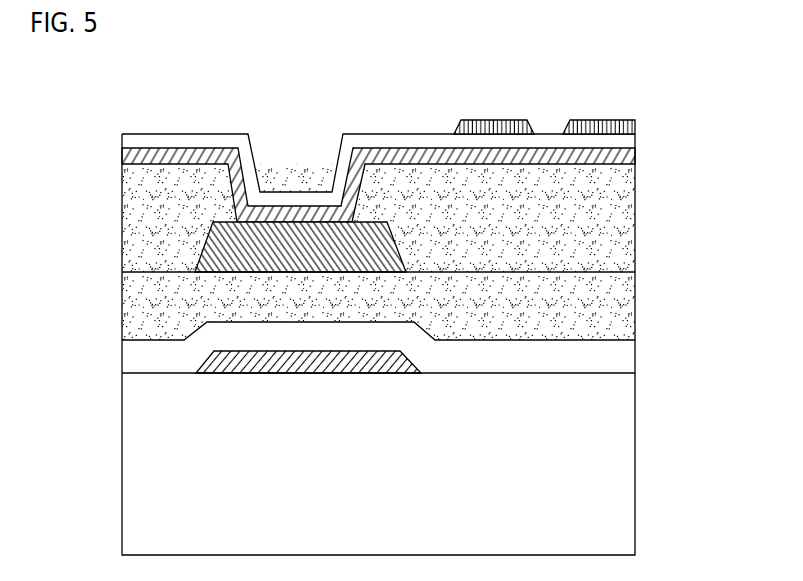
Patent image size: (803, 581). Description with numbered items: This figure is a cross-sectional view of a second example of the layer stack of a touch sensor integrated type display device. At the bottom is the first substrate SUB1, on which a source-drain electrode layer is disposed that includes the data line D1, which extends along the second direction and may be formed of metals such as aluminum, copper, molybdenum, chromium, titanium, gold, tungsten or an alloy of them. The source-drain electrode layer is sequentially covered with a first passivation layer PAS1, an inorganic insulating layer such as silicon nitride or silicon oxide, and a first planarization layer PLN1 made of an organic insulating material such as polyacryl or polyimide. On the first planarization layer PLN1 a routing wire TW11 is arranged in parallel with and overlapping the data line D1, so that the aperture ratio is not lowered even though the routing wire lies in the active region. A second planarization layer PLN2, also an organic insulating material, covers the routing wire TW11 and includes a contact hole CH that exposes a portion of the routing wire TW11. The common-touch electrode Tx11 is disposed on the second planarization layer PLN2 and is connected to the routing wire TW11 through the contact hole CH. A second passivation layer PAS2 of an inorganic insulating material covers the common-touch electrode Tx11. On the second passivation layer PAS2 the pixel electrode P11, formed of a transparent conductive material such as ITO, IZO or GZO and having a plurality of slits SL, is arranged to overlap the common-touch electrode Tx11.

The pixel electrode P11 is at (493, 128).
The slit SL is at (551, 128).
The contact hole CH is at (353, 185).
The second passivation layer PAS2 is at (630, 140).
The common-touch electrode Tx11 is at (630, 160).
The second planarization layer PLN2 is at (630, 194).
The routing wire TW11 is at (380, 247).
The first planarization layer PLN1 is at (630, 291).
The data line D1 is at (408, 359).
The first passivation layer PAS1 is at (630, 364).
The first substrate SUB1 is at (628, 447).